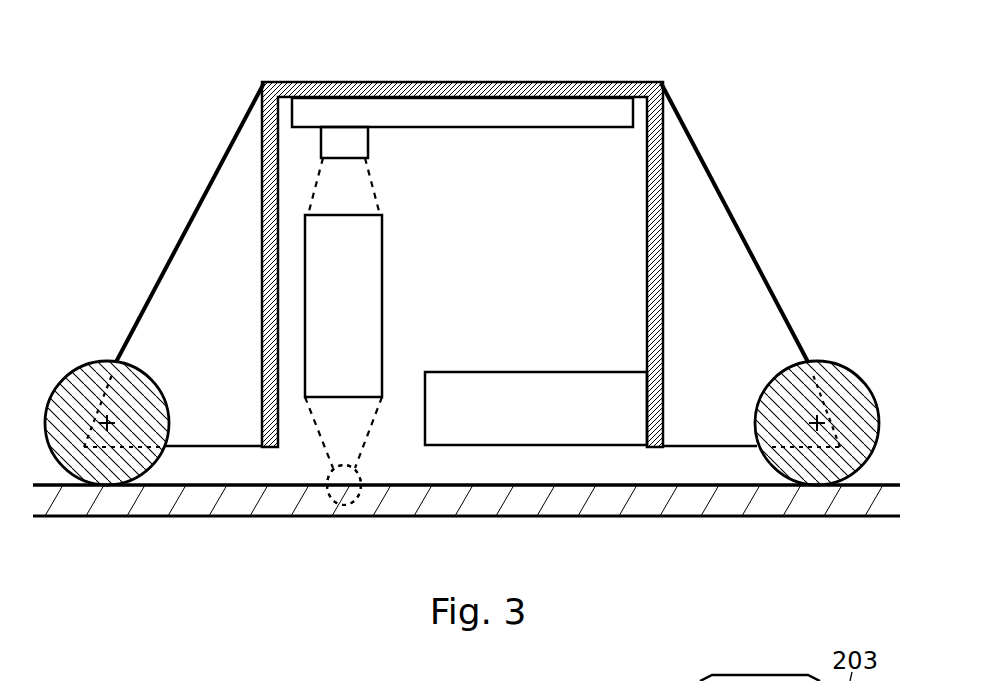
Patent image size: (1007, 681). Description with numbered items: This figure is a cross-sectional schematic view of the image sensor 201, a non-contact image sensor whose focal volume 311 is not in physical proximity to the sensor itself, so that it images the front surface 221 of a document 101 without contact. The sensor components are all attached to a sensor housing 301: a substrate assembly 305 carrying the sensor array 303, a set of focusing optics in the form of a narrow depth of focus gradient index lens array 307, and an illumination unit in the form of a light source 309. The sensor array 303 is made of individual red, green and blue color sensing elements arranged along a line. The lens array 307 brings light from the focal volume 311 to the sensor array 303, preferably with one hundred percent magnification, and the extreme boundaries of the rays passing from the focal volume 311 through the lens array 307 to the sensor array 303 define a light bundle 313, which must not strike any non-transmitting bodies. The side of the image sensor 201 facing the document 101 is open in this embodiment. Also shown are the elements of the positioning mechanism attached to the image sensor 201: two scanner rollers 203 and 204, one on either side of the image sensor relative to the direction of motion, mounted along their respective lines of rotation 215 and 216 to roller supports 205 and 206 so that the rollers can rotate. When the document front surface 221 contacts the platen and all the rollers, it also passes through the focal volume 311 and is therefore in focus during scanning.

The image sensor 201 is at (515, 44).
The sensor housing 301 is at (645, 238).
The substrate assembly 305 is at (580, 121).
The sensor array 303 is at (370, 150).
The lens array 307 is at (382, 243).
The light bundle 313 is at (372, 178).
The light source 309 is at (565, 372).
The scanner roller 204 is at (100, 360).
The scanner roller 203 is at (826, 360).
The line of rotation 216 is at (116, 430).
The line of rotation 215 is at (818, 430).
The roller support 206 is at (186, 252).
The roller support 205 is at (757, 293).
The document 101 is at (243, 502).
The front surface 221 is at (600, 492).
The focal volume 311 is at (345, 490).